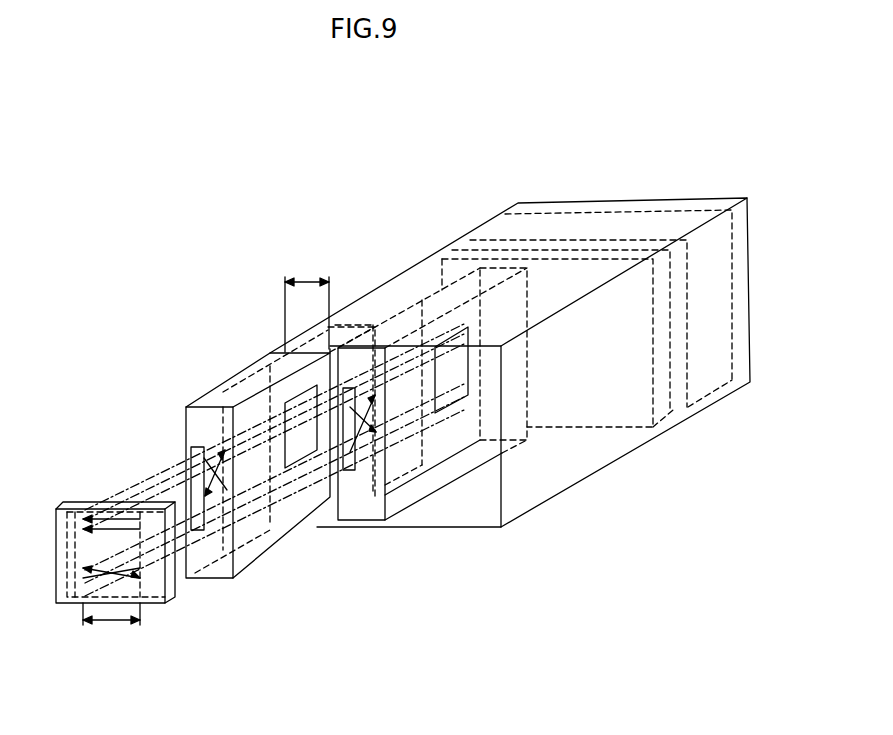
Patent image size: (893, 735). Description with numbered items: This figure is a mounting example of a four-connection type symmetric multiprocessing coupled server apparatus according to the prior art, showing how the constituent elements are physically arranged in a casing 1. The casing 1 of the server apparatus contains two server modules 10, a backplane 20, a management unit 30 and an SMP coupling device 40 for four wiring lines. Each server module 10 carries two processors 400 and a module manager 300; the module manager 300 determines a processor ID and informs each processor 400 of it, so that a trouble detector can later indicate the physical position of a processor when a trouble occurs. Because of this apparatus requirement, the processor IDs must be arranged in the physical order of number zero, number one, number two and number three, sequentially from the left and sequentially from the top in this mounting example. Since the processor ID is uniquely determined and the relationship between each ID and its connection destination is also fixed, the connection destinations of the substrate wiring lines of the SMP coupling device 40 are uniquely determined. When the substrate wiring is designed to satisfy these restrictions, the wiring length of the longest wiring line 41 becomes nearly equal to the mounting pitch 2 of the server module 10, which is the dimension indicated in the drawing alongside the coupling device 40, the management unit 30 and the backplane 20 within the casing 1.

The casing 1 is at (405, 273).
The mounting pitch 2 is at (308, 282).
The server module 10 is at (246, 377).
The backplane 20 is at (450, 257).
The management unit 30 is at (508, 221).
The SMP coupling device 40 is at (176, 591).
The longest wiring line 41 is at (118, 582).
The module manager 300 is at (289, 396).
The processor 400 is at (223, 398).